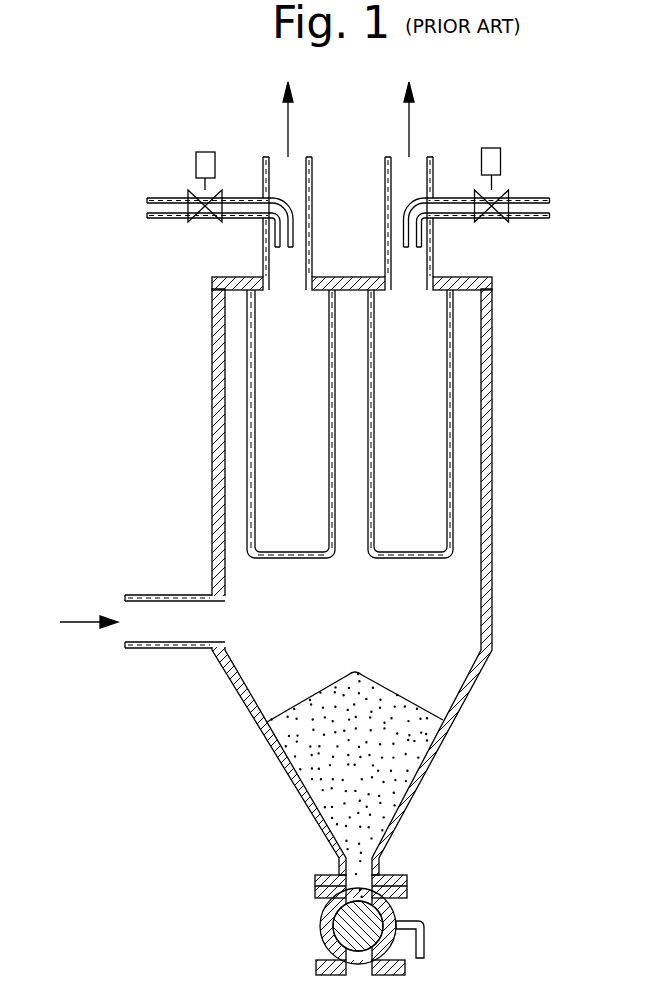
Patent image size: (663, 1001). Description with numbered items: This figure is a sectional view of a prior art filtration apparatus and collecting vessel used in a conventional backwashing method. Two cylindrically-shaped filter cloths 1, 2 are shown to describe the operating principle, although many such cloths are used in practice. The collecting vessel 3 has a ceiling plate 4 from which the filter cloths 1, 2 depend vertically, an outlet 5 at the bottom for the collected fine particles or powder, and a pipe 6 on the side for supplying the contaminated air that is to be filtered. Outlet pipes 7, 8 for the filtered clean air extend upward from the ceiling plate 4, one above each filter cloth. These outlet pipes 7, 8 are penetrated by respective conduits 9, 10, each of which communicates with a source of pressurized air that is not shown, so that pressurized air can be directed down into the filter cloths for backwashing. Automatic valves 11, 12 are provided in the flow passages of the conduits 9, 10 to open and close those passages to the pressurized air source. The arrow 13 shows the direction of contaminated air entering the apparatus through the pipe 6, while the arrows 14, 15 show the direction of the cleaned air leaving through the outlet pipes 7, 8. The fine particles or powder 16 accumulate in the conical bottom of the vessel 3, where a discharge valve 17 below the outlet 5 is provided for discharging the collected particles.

The filter cloth 1 is at (318, 559).
The filter cloth 2 is at (455, 525).
The collecting vessel 3 is at (491, 615).
The ceiling plate 4 is at (492, 279).
The outlet 5 is at (366, 877).
The pipe 6 is at (145, 649).
The outlet pipe 7 is at (313, 171).
The outlet pipe 8 is at (433, 166).
The conduit 9 is at (243, 195).
The conduit 10 is at (440, 197).
The automatic valve 11 is at (200, 183).
The automatic valve 12 is at (497, 183).
The arrow 13 is at (76, 626).
The arrow 14 is at (286, 120).
The arrow 15 is at (411, 121).
The fine particles or powder 16 is at (313, 790).
The discharge valve 17 is at (398, 911).